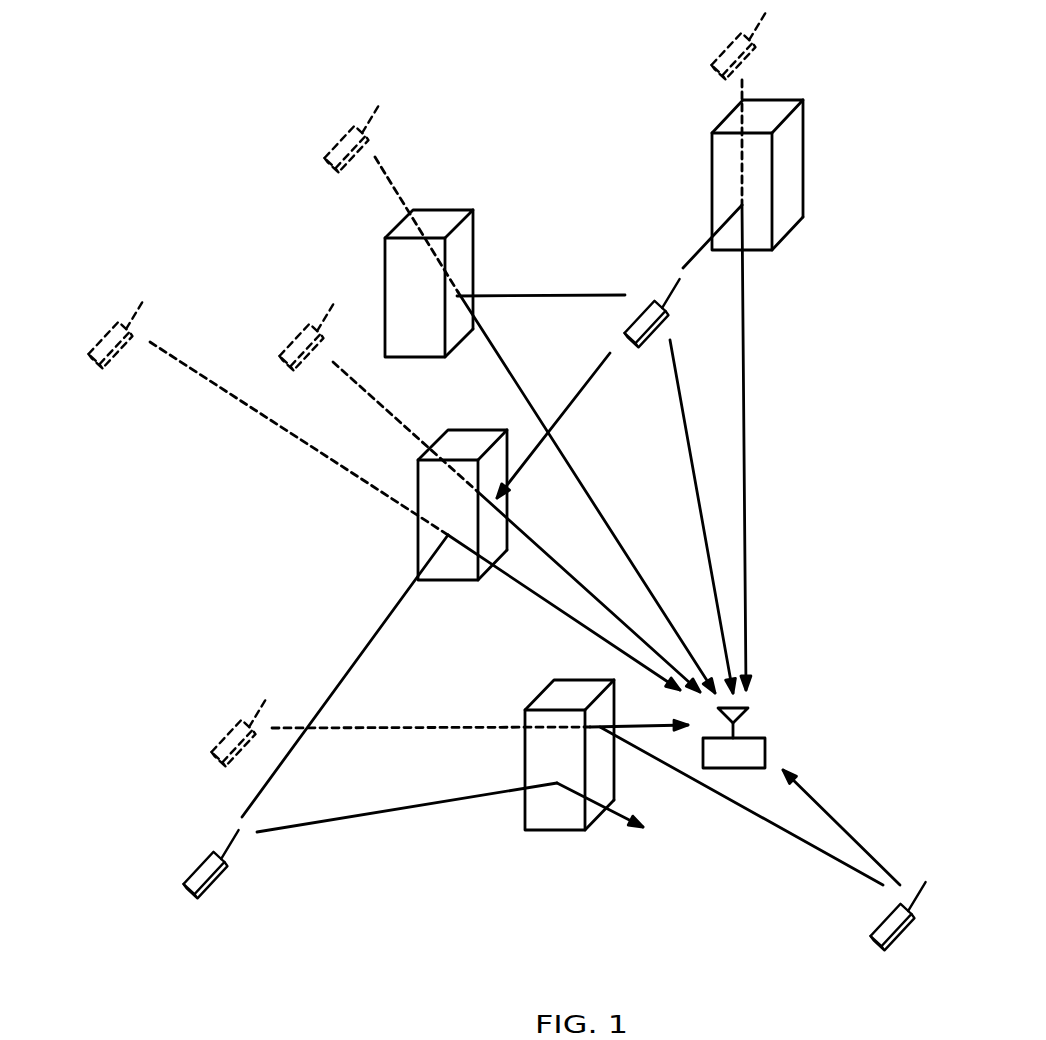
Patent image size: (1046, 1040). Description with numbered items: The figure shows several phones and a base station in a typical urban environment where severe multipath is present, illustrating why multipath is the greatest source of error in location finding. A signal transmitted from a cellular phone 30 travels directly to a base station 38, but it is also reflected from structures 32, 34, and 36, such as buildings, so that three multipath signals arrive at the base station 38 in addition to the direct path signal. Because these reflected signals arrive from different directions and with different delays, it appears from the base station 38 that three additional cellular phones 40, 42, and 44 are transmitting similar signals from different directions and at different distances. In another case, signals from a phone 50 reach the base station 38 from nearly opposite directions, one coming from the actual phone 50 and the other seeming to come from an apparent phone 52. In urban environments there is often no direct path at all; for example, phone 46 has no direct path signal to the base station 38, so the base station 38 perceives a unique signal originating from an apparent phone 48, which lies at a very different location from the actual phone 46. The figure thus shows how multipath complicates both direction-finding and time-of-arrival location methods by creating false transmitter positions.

The cellular phone 30 is at (665, 310).
The structure 32 is at (805, 162).
The structure 34 is at (477, 270).
The structure 36 is at (417, 500).
The base station 38 is at (767, 753).
The apparent cellular phone 40 is at (712, 63).
The apparent cellular phone 42 is at (323, 153).
The apparent cellular phone 44 is at (277, 353).
The phone 46 is at (183, 882).
The apparent phone 48 is at (88, 348).
The phone 50 is at (868, 933).
The apparent phone 52 is at (210, 748).